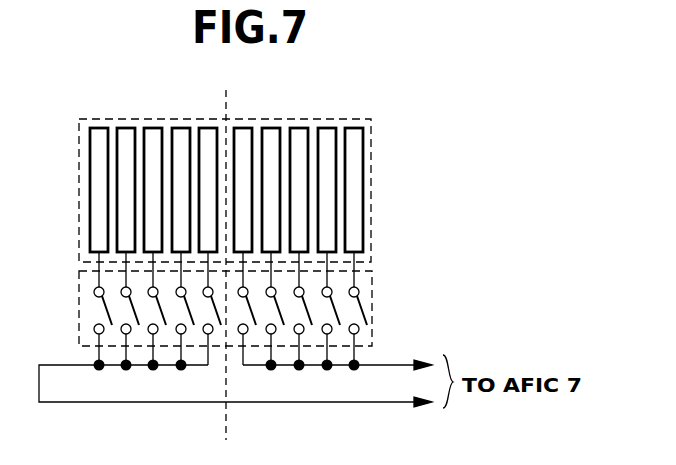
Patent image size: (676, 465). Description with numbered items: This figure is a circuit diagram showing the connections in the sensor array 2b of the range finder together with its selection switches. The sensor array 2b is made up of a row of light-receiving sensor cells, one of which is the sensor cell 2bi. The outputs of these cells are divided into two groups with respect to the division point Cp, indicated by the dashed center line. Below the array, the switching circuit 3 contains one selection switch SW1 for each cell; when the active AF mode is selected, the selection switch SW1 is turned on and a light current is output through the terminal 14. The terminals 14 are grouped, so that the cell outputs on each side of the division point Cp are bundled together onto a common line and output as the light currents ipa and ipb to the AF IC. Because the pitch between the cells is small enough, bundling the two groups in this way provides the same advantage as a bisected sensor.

The sensor array 2b is at (261, 190).
The sensor cell 2bi is at (357, 208).
The switching circuit 3 is at (264, 309).
The selection switch SW1 is at (399, 320).
The terminal 14 is at (359, 331).
The division point Cp is at (228, 101).
The light current ipb is at (78, 366).
The light current ipa is at (387, 366).